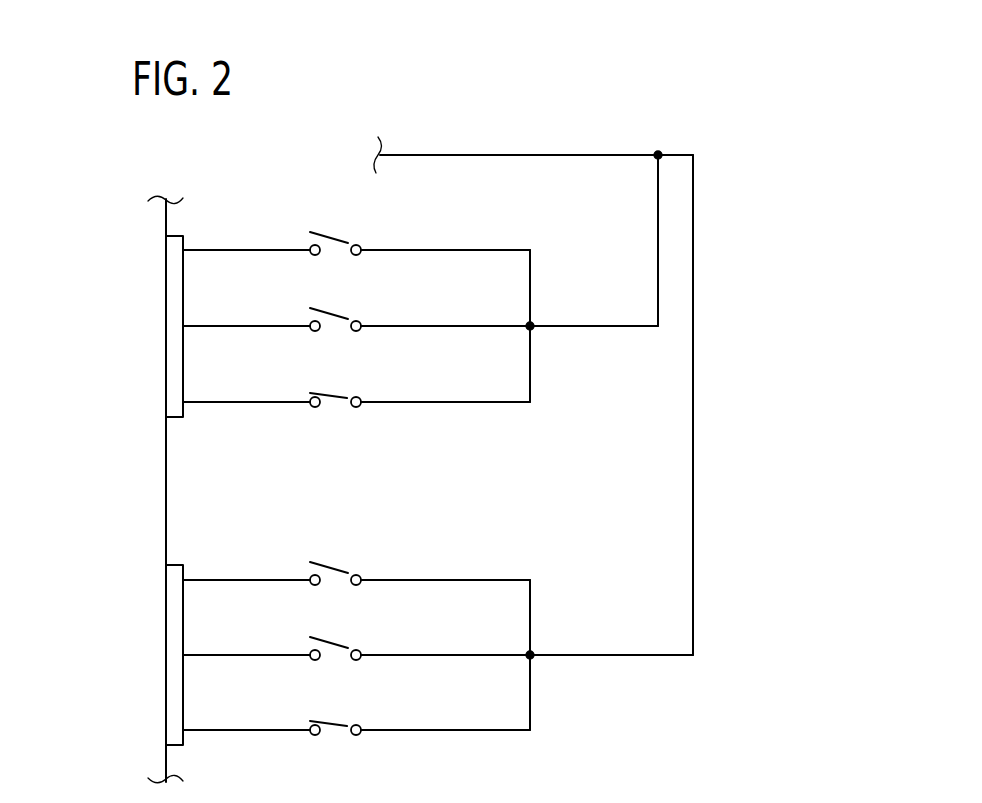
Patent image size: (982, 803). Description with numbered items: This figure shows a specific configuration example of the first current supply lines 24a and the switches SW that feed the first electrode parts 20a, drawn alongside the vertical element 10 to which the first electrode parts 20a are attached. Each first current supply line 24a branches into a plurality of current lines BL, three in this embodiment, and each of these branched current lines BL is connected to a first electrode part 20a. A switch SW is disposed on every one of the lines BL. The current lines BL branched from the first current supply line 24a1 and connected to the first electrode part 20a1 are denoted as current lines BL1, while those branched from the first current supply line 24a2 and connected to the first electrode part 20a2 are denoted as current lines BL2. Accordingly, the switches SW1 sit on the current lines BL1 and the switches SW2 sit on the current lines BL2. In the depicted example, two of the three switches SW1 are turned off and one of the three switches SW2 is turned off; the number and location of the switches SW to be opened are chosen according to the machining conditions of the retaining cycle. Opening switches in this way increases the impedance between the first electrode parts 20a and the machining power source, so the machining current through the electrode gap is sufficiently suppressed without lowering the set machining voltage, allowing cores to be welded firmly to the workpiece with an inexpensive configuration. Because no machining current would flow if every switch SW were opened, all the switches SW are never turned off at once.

The battery / power storage device 10 is at (165, 478).
The first electrode part 20a is at (107, 490).
The first electrode part 20a1 is at (172, 282).
The first electrode part 20a2 is at (172, 612).
The switch SW is at (391, 470).
The switch SW1 is at (358, 237).
The switch SW2 is at (358, 567).
The current line BL is at (409, 493).
The current line BL1 is at (516, 249).
The current line BL2 is at (516, 579).
The first current supply line 24a is at (607, 398).
The first current supply line 24a1 is at (664, 218).
The first current supply line 24a2 is at (696, 590).